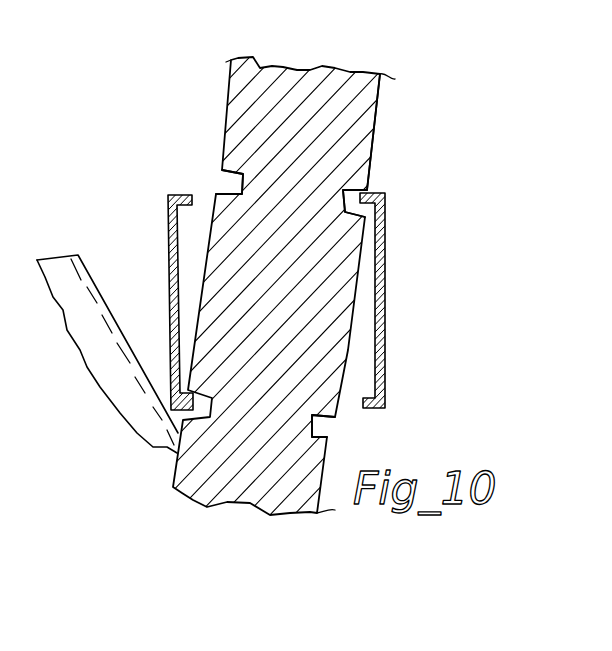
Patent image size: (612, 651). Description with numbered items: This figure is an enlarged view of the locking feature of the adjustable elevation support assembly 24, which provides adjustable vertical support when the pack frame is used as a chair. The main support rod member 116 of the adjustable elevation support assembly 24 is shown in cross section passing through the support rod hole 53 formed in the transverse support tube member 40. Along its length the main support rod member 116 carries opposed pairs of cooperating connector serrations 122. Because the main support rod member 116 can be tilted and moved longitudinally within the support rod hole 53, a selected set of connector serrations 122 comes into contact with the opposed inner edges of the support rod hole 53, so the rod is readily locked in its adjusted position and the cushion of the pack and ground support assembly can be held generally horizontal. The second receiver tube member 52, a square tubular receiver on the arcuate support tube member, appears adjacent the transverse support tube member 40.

The adjustable elevation support assembly 24 is at (335, 55).
The main support rod member 116 is at (368, 100).
The connector serrations 122 is at (365, 190).
The transverse support tube member 40 is at (385, 293).
The support rod hole 53 is at (192, 206).
The second receiver tube member 52 is at (106, 298).